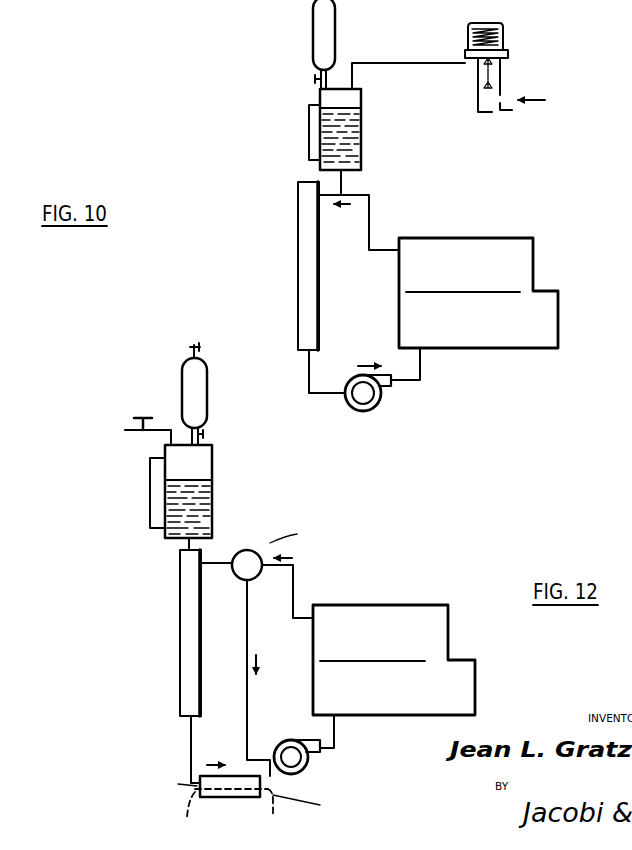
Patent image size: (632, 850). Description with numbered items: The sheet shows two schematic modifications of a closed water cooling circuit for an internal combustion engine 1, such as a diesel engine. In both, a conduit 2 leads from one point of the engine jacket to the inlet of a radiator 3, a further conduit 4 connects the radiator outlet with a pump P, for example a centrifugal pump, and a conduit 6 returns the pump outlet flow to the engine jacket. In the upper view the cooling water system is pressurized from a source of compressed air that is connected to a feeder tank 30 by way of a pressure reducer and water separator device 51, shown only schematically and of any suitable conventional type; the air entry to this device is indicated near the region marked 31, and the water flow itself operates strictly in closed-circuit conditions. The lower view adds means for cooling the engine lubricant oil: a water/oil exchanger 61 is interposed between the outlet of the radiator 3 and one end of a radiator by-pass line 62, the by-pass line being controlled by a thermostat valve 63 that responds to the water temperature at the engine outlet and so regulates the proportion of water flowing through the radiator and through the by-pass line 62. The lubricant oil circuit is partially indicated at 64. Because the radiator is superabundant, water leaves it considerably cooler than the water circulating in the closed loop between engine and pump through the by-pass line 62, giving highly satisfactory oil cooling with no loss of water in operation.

In FIG. 10, the internal combustion engine 1 is at (525, 238).
In FIG. 12, the internal combustion engine 1 is at (425, 605).
In FIG. 10, the conduit 2 is at (372, 223).
In FIG. 12, the conduit 2 is at (297, 592).
In FIG. 10, the radiator 3 is at (300, 265).
In FIG. 12, the radiator 3 is at (183, 633).
In FIG. 10, the conduit 4 is at (305, 376).
In FIG. 12, the conduit 4 is at (190, 753).
In FIG. 10, the conduit 6 is at (421, 371).
In FIG. 12, the conduit 6 is at (337, 737).
In FIG. 10, the pump P is at (371, 409).
In FIG. 12, the pump P is at (300, 773).
In FIG. 10, the feeder tank 30 is at (356, 152).
In FIG. 10, the air inlet 31 is at (536, 124).
In FIG. 10, the pressure reducer and water separator device 51 is at (510, 67).
In FIG. 12, the water/oil exchanger 61 is at (230, 797).
In FIG. 12, the radiator by-pass line 62 is at (244, 678).
In FIG. 12, the thermostat valve 63 is at (248, 553).
In FIG. 12, the lubricant oil circuit 64 is at (278, 800).